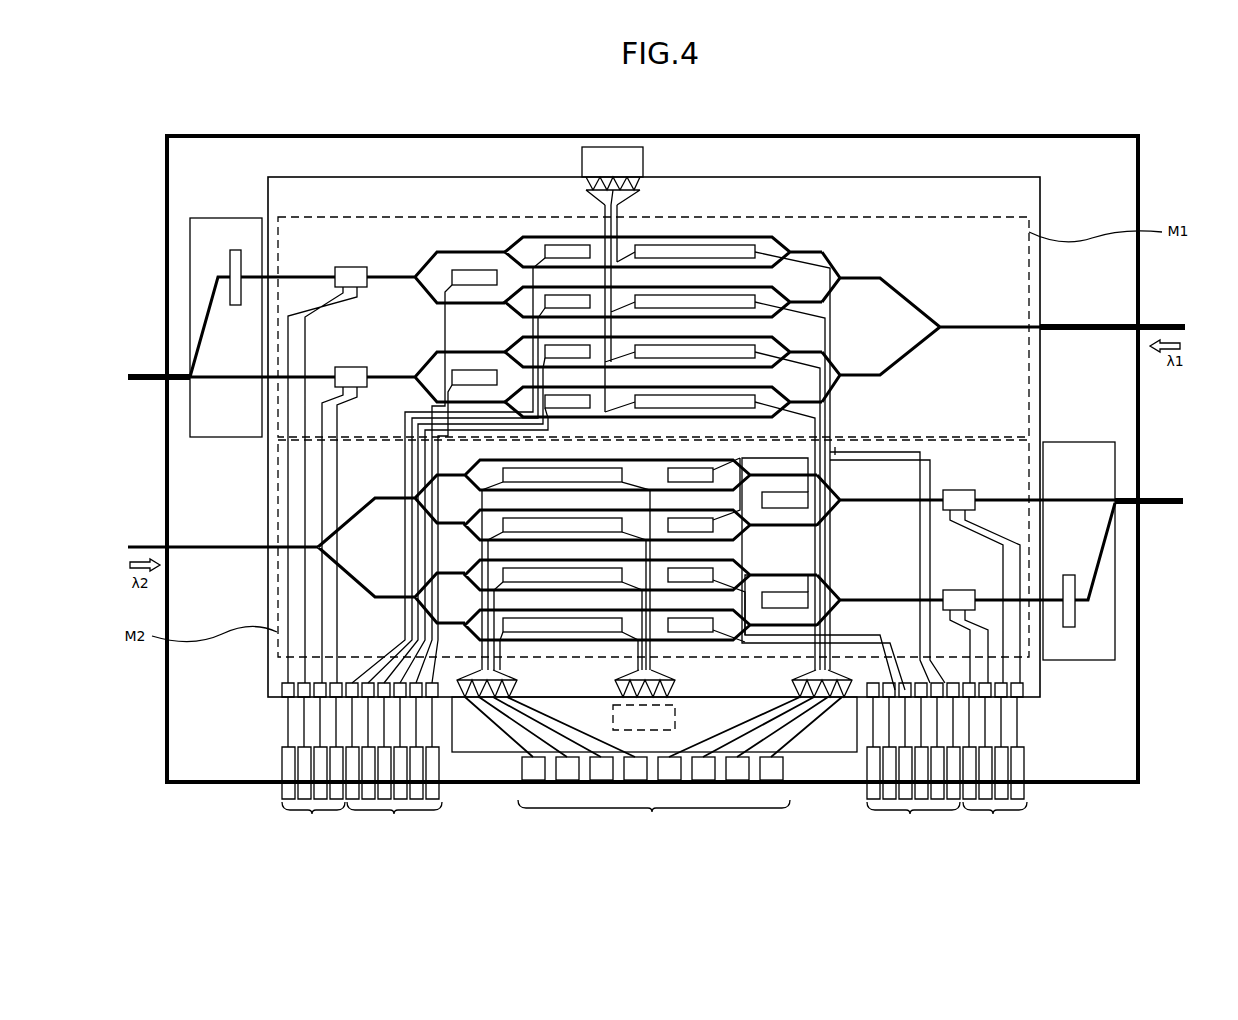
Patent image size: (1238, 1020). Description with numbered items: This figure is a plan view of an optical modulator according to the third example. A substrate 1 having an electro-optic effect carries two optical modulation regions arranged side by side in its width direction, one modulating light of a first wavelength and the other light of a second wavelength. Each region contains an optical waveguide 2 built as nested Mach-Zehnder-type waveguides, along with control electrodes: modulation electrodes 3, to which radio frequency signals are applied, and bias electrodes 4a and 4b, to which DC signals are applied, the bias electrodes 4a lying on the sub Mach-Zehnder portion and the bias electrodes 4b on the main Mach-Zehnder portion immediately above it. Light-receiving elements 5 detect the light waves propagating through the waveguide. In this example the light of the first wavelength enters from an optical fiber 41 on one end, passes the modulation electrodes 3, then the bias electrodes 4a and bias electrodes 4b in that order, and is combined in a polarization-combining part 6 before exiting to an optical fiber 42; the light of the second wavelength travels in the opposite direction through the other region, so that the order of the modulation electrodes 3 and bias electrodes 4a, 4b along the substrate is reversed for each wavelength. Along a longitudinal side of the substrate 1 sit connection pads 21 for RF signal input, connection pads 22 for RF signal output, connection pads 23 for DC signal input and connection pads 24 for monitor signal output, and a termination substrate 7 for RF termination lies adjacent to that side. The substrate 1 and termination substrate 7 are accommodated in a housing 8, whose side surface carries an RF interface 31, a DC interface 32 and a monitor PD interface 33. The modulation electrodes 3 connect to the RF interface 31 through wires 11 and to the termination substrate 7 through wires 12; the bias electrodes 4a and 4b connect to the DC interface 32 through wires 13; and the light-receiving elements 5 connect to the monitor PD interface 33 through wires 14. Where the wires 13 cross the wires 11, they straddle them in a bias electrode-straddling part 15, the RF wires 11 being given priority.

The substrate 1 is at (1000, 185).
The optical waveguide 2 is at (859, 261).
The modulation electrodes 3 is at (718, 243).
The bias electrodes 4a is at (547, 245).
The bias electrodes 4b is at (470, 268).
The light-receiving elements 5 is at (351, 265).
The polarization-combining part 6 is at (235, 235).
The termination substrate 7 is at (625, 215).
The housing 8 is at (1140, 160).
The wires 11 is at (818, 233).
The wires 12 is at (617, 265).
The wires 13 is at (1030, 478).
The wires 14 is at (310, 298).
The bias electrode-straddling part 15 is at (820, 454).
The connection pads 21 is at (844, 702).
The connection pads 22 is at (591, 160).
The connection pads 23 is at (950, 690).
The connection pads 24 is at (282, 696).
The RF interface 31 is at (652, 812).
The DC interface 32 is at (396, 814).
The monitor PD interface 33 is at (314, 814).
The optical fiber 41 is at (1155, 324).
The optical fiber 42 is at (170, 375).